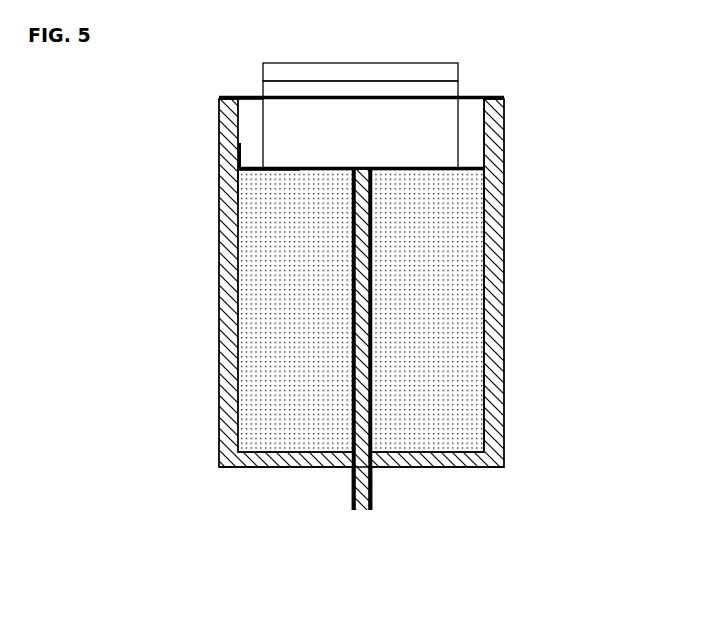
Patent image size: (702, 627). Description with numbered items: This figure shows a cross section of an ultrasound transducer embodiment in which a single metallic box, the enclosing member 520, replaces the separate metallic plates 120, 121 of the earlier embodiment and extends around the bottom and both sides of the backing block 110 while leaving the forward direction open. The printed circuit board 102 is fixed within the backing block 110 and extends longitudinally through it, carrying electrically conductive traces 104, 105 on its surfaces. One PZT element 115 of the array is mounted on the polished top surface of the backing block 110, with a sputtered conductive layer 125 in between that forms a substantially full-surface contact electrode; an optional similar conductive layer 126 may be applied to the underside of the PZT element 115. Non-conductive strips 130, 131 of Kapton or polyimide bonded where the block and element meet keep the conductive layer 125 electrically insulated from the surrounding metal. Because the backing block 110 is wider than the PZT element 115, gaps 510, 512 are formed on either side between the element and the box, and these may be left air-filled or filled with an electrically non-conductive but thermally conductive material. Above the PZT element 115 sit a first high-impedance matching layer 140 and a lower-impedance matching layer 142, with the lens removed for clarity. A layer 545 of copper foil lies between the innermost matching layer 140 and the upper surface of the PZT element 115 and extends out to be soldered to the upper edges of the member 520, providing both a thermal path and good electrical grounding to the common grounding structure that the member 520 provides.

The printed circuit board 102 is at (362, 490).
The electrically conductive trace 104 is at (373, 330).
The electrically conductive trace 105 is at (322, 390).
The backing block 110 is at (460, 340).
The PZT element 115 is at (440, 155).
The metallic plate 120 is at (218, 299).
The metallic plate 121 is at (494, 258).
The conductive layer 125 is at (282, 168).
The conductive layer 126 is at (300, 170).
The non-conductive strip 130 is at (240, 182).
The non-conductive strip 131 is at (484, 190).
The high-impedance matching layer 140 is at (436, 90).
The lower-impedance matching layer 142 is at (382, 72).
The gap 510 is at (250, 122).
The gap 512 is at (472, 117).
The enclosing member 520 is at (212, 408).
The conductive layer 545 is at (466, 98).